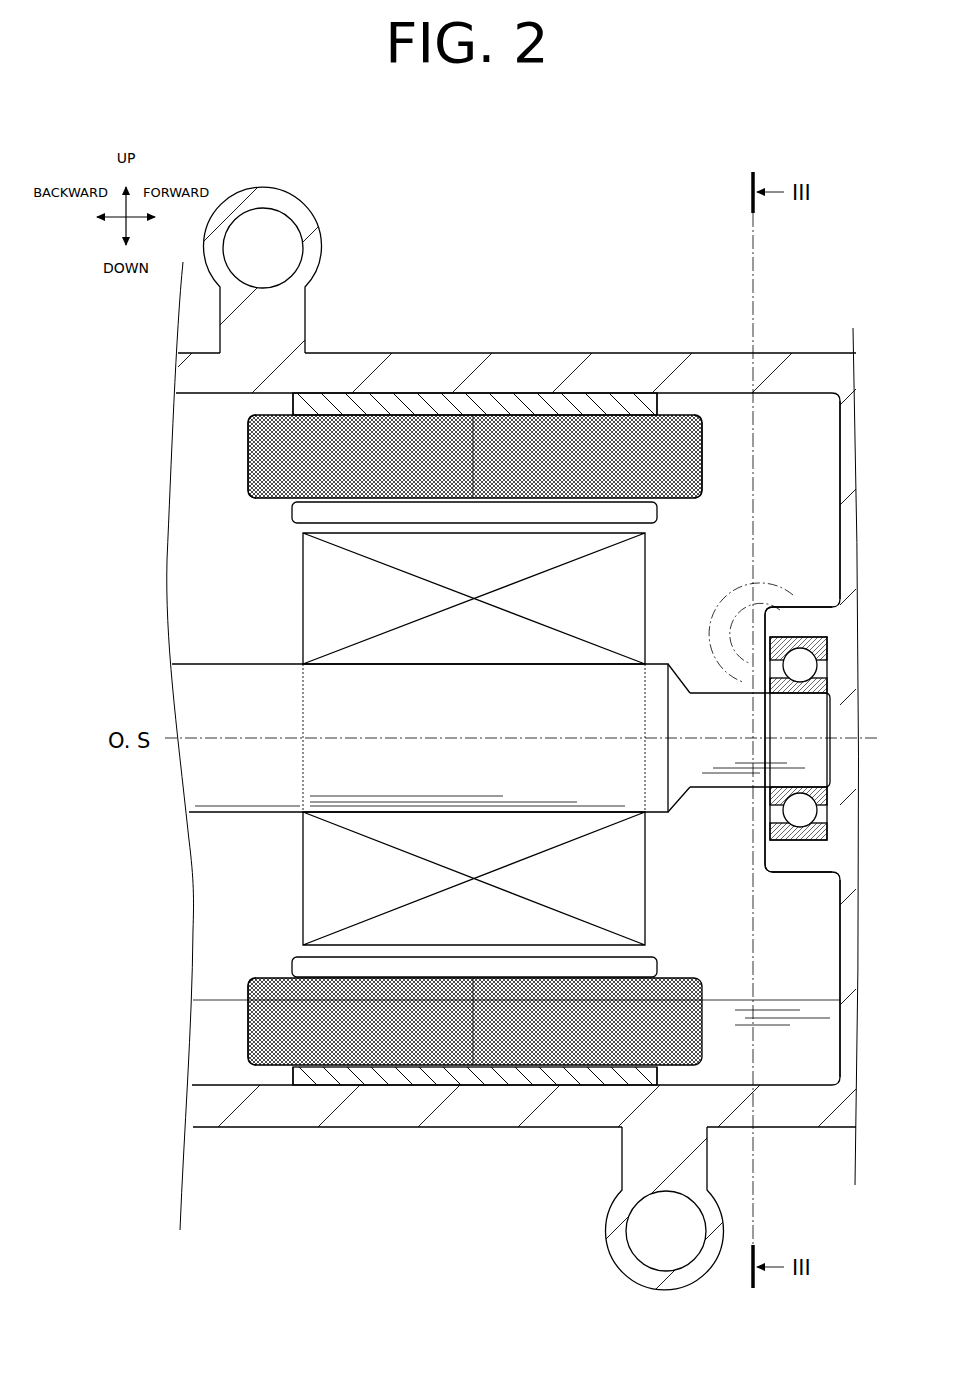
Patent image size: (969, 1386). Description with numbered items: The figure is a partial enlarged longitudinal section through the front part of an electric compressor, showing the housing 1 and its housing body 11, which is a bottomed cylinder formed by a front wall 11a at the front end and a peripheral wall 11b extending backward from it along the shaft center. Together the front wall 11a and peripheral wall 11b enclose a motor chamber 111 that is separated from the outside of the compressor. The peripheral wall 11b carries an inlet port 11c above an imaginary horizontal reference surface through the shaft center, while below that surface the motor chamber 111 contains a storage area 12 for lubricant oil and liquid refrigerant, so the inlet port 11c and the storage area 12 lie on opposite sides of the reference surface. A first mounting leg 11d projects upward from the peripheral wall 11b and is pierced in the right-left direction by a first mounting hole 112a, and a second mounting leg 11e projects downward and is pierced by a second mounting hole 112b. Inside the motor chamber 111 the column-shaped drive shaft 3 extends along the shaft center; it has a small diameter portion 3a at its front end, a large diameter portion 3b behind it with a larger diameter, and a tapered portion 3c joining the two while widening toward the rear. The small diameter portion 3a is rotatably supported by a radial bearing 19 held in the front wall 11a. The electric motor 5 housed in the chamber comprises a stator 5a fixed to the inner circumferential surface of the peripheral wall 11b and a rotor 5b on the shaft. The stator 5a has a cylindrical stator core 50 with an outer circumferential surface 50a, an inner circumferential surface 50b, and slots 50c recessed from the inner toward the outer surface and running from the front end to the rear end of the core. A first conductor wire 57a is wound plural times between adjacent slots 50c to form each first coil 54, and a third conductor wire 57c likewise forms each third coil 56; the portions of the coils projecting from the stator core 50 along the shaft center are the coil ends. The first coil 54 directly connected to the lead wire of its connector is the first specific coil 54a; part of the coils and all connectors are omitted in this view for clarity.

The housing 1 is at (351, 209).
The drive shaft 3 is at (187, 688).
The small diameter portion 3a is at (735, 785).
The large diameter portion 3b is at (218, 670).
The tapered portion 3c is at (667, 780).
The electric motor 5 is at (124, 411).
The stator 5a is at (240, 436).
The rotor 5b is at (315, 548).
The housing body 11 is at (450, 344).
The front wall 11a is at (783, 340).
The peripheral wall 11b is at (523, 365).
The inlet port 11c is at (793, 622).
The first mounting leg 11d is at (290, 313).
The second mounting leg 11e is at (626, 1165).
The motor chamber 111 is at (804, 966).
The first mounting hole 112a is at (283, 256).
The second mounting hole 112b is at (645, 1232).
The storage area 12 is at (793, 1066).
The radial bearing 19 is at (791, 835).
The stator core 50 is at (608, 401).
The outer circumferential surface 50a is at (643, 393).
The inner circumferential surface 50b is at (565, 524).
The slot 50c is at (395, 430).
The first coil 54 is at (502, 500).
The first specific coil 54a is at (668, 505).
The third coil 56 is at (668, 970).
The first conductor wire 57a is at (250, 488).
The third conductor wire 57c is at (262, 978).